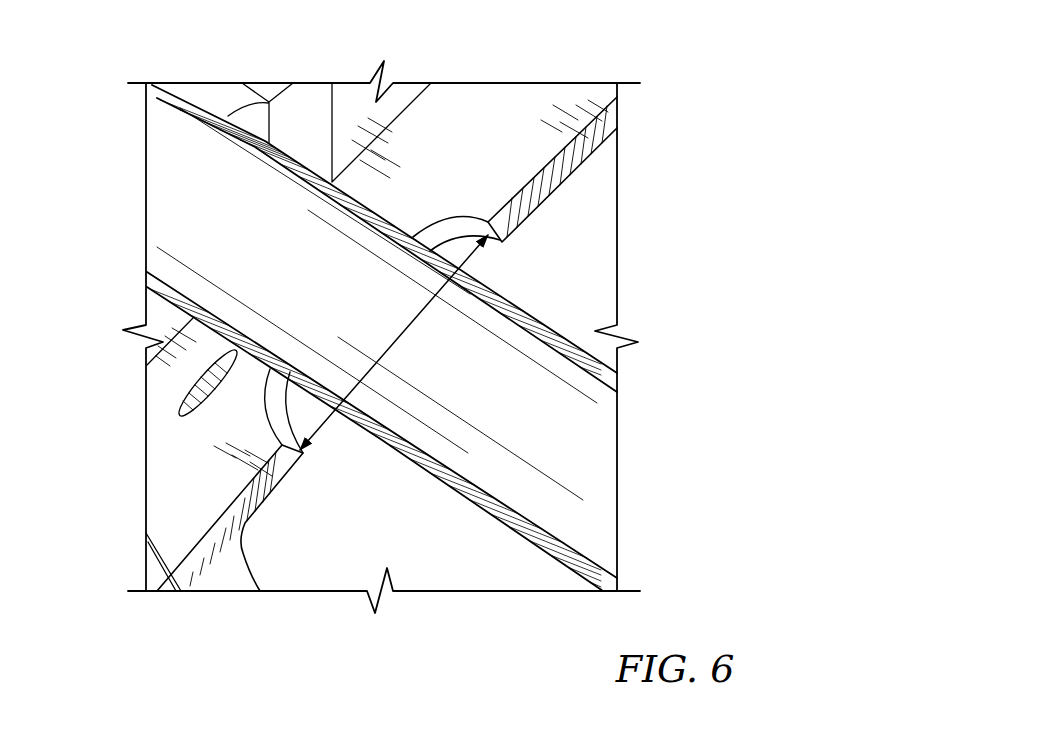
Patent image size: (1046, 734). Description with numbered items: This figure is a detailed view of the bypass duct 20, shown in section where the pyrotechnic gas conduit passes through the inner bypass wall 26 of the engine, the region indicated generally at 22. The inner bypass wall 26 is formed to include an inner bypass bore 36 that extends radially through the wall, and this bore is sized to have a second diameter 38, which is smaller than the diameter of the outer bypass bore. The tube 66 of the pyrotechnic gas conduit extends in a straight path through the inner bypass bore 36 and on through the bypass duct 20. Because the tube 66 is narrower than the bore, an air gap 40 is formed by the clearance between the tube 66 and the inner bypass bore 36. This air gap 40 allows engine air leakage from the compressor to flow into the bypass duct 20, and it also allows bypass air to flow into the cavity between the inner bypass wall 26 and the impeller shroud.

The bypass duct 20 is at (530, 108).
The housing wall 22 is at (121, 188).
The inner bypass wall 26 is at (614, 131).
The inner bypass bore 36 is at (509, 247).
The second diameter 38 is at (322, 422).
The air gap 40 is at (324, 424).
The tube 66 is at (549, 327).